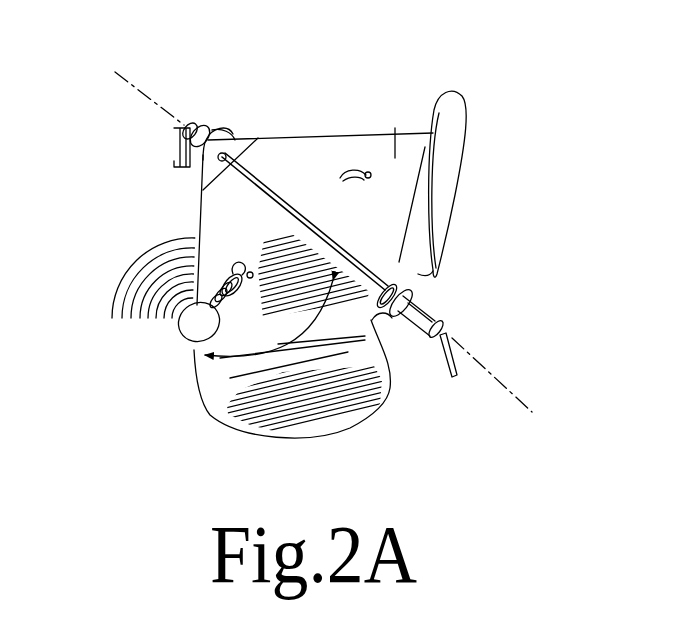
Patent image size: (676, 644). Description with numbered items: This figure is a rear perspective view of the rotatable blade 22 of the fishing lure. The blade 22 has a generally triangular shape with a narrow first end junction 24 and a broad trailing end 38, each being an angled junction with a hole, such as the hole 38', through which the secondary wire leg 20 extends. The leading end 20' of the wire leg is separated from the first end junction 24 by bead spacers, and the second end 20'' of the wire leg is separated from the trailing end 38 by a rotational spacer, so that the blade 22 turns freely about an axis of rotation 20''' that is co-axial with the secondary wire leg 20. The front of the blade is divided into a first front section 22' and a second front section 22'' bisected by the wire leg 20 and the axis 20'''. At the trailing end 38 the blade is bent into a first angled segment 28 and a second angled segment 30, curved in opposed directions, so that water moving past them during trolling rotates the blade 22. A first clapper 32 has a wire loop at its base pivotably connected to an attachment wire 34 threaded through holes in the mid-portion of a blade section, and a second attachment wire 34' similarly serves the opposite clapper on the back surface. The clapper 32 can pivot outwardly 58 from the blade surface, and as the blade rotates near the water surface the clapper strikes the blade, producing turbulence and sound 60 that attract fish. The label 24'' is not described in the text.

The secondary wire leg 20 is at (295, 183).
The leading end of the secondary wire leg 20' is at (138, 119).
The second end of the secondary wire leg 20'' is at (462, 378).
The axis of rotation 20''' is at (536, 375).
The blade 22 is at (320, 136).
The first front section 22' is at (375, 105).
The second front section 22'' is at (172, 230).
The first end junction 24 is at (208, 106).
The lower ferrule neck 24'' is at (400, 345).
The first angled segment 28 is at (453, 128).
The second angled segment 30 is at (368, 420).
The first clapper 32 is at (191, 333).
The attachment wire 34 is at (241, 255).
The attachment wire 34' is at (357, 96).
The trailing end 38 is at (443, 298).
The hole 38' is at (488, 317).
The outward pivoting 58 is at (243, 370).
The sound 60 is at (115, 292).